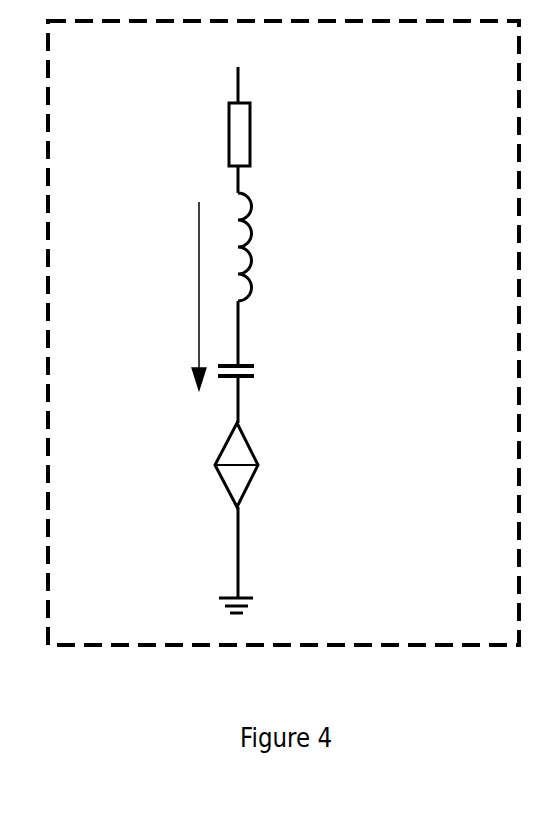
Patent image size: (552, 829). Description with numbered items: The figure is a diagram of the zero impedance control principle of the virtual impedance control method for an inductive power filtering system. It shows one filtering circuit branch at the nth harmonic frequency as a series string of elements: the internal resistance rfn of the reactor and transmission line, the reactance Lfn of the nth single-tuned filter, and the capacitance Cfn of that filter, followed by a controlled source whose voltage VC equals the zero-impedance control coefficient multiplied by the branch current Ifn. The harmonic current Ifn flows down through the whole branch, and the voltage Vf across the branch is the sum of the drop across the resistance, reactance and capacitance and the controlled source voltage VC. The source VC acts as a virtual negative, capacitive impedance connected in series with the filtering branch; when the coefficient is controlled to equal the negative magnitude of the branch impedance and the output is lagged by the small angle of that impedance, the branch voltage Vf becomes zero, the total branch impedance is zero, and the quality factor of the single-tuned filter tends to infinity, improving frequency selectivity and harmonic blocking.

The internal resistance rfn is at (265, 134).
The reactance of the nth single-tuned filter Lfn is at (272, 247).
The capacitance of the nth single-tuned filter Cfn is at (262, 376).
The controlled voltage VC is at (339, 468).
The nth harmonic current of the filtering branch Ifn is at (197, 271).
The voltage of the filtering circuit branch Vf is at (129, 340).